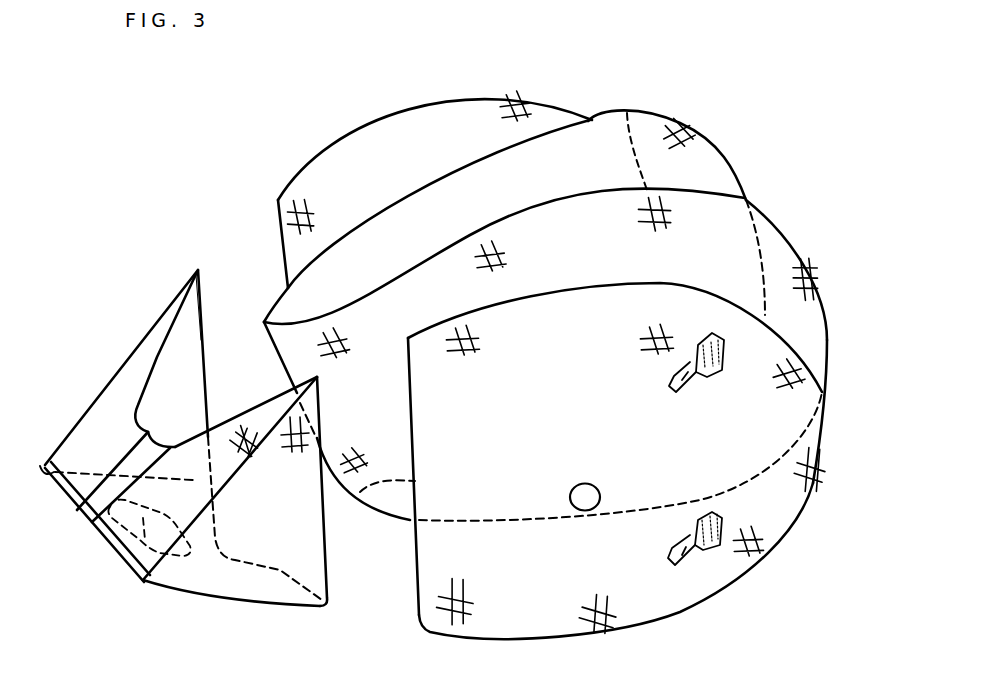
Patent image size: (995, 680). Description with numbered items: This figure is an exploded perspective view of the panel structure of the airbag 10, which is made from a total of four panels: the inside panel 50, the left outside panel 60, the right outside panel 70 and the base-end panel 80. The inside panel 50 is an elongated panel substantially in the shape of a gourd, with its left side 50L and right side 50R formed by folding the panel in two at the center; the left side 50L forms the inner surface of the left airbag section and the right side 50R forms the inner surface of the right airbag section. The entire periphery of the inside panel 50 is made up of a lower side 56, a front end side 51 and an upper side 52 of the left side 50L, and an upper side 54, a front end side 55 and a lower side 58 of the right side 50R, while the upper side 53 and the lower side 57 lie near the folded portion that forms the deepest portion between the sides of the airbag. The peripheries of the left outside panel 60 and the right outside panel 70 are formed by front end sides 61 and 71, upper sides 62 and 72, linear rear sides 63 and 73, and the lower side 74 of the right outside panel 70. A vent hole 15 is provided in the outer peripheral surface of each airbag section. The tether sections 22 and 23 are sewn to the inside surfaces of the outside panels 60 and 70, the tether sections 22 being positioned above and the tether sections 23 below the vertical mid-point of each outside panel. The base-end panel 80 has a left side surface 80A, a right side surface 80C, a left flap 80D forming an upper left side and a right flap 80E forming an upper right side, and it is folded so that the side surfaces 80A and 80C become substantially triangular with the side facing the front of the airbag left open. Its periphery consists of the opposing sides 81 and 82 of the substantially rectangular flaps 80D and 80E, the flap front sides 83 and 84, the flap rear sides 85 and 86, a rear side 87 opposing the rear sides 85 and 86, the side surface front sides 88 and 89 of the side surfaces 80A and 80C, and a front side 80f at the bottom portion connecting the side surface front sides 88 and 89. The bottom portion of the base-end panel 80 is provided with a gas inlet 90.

The airbag 10 is at (836, 160).
The vent hole 15 is at (599, 488).
The tether section 22 is at (700, 378).
The tether section 23 is at (698, 560).
The inside panel 50 is at (715, 129).
The left side of inside panel 50L is at (383, 240).
The right side of inside panel 50R is at (590, 223).
The front end side 51 is at (750, 184).
The upper side 52 is at (440, 180).
The upper side 53 is at (270, 320).
The upper side 54 is at (507, 223).
The front end side 55 is at (829, 325).
The lower side 56 is at (388, 482).
The lower side 57 is at (362, 498).
The lower side 58 is at (512, 517).
The left outside panel 60 is at (326, 147).
The front end side 61 is at (627, 113).
The upper side 62 is at (424, 106).
The linear rear side 63 is at (280, 230).
The right outside panel 70 is at (763, 580).
The front end side 71 is at (822, 476).
The upper side 72 is at (563, 293).
The linear rear side 73 is at (410, 410).
The lower side 74 is at (513, 635).
The base-end panel 80 is at (201, 606).
The left side surface 80A is at (200, 340).
The right side surface 80C is at (243, 586).
The left flap 80D is at (125, 376).
The right flap 80E is at (240, 455).
The front side 80f is at (287, 569).
The side of left flap 81 is at (130, 454).
The side of right flap 82 is at (156, 448).
The flap front side 83 is at (158, 362).
The flap front side 84 is at (241, 432).
The rear side of left flap 85 is at (43, 463).
The rear side of right flap 86 is at (103, 550).
The rear side 87 is at (77, 532).
The side surface front side 88 is at (207, 304).
The side surface front side 89 is at (331, 582).
The gas inlet 90 is at (161, 518).